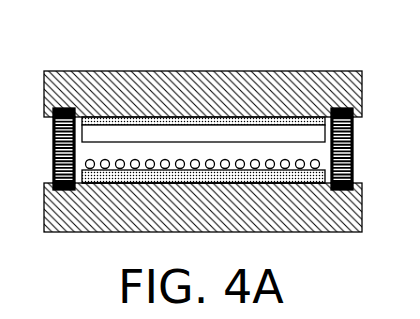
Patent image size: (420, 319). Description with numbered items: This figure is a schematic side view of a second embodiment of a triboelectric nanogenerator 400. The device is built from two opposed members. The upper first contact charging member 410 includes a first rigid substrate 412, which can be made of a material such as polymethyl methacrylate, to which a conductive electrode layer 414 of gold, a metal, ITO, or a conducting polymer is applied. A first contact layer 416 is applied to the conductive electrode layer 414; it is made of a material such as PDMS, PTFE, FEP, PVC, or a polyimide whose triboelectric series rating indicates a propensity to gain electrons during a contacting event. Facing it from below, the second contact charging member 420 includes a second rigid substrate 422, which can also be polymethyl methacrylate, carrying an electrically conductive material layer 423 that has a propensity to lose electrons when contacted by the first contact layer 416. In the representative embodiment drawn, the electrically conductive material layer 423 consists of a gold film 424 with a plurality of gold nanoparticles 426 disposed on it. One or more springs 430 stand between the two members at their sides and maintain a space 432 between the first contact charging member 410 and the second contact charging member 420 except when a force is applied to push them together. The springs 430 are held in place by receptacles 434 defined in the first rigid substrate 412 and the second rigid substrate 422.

The triboelectric nanogenerator 400 is at (390, 36).
The first contact charging member 410 is at (92, 65).
The first rigid substrate 412 is at (149, 80).
The conductive electrode layer 414 is at (223, 120).
The first contact layer 416 is at (291, 133).
The second contact charging member 420 is at (105, 238).
The second rigid substrate 422 is at (157, 217).
The electrically conductive material layer 423 is at (215, 192).
The gold film 424 is at (268, 178).
The gold nanoparticles 426 is at (286, 168).
The springs 430 is at (55, 160).
The space 432 is at (318, 152).
The receptacles 434 is at (53, 112).